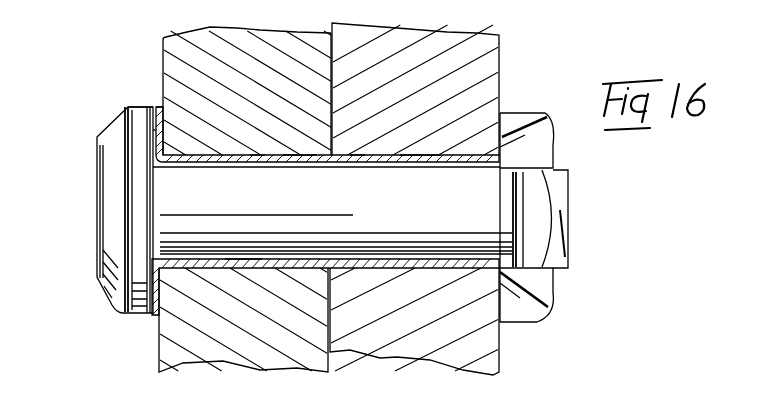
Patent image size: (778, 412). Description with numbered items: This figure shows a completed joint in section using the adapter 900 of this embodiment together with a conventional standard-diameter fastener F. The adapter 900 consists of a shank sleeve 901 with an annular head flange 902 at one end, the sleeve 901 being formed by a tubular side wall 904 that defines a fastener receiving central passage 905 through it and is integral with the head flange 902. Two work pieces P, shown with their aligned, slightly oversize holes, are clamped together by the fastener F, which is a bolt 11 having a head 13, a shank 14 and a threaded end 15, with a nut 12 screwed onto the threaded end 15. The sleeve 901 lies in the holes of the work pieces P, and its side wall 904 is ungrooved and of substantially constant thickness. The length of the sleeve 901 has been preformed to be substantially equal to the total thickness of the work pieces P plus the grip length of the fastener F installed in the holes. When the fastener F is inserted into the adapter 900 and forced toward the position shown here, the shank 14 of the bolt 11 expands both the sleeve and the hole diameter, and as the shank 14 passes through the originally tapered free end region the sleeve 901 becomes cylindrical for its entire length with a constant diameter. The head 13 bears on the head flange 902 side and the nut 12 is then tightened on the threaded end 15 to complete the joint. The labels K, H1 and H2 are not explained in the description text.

The bolt 11 is at (131, 106).
The nut 12 is at (553, 149).
The head 13 is at (110, 145).
The shank 14 is at (392, 225).
The threaded end 15 is at (566, 217).
The adapter 900 is at (170, 153).
The shank sleeve 901 is at (447, 133).
The annular head flange 902 is at (157, 106).
The tubular side wall 904 is at (327, 133).
The fastener receiving central passage 905 is at (231, 262).
The work pieces P is at (273, 363).
The fastener F is at (85, 182).
The clearance gap K is at (153, 135).
The hole portion H1 is at (278, 135).
The hole portion H2 is at (379, 135).